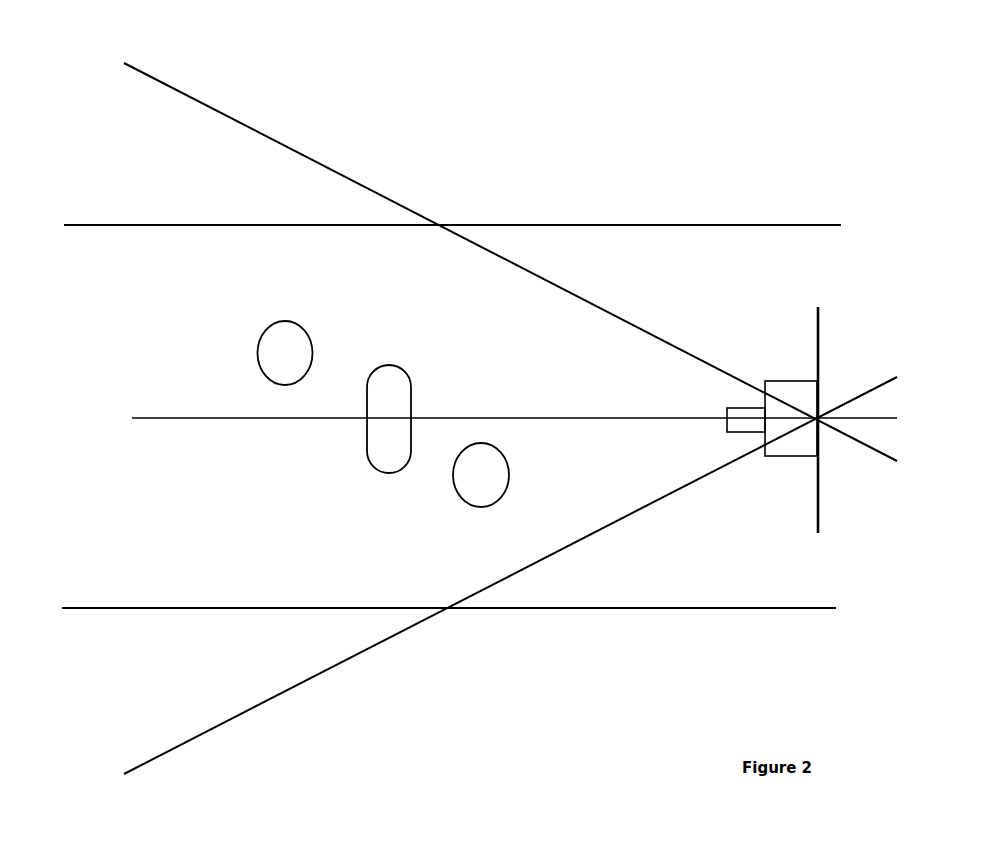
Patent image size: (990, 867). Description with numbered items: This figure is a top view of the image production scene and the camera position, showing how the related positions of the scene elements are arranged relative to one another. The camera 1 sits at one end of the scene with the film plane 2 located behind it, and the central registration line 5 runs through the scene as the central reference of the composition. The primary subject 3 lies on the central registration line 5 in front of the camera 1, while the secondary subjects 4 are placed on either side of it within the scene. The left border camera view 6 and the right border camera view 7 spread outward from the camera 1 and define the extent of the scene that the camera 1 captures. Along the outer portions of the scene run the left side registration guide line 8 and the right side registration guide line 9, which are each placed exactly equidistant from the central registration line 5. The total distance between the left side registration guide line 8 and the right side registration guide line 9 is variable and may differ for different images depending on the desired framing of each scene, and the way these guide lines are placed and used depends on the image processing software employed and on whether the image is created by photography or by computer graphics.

The camera 1 is at (781, 377).
The film plane 2 is at (940, 508).
The primary subject 3 is at (367, 462).
The secondary subjects 4 is at (439, 333).
The central registration line 5 is at (199, 410).
The left border camera view 6 is at (298, 693).
The right border camera view 7 is at (298, 145).
The left side registration guide line 8 is at (604, 620).
The right side registration guide line 9 is at (604, 98).